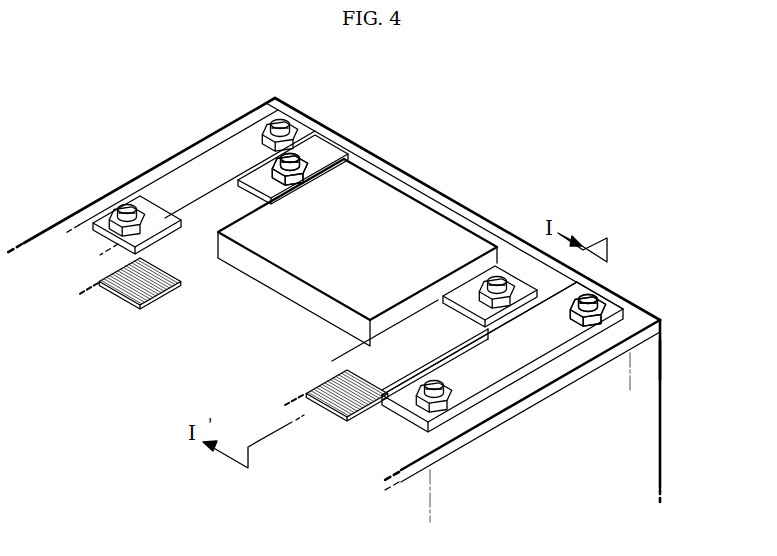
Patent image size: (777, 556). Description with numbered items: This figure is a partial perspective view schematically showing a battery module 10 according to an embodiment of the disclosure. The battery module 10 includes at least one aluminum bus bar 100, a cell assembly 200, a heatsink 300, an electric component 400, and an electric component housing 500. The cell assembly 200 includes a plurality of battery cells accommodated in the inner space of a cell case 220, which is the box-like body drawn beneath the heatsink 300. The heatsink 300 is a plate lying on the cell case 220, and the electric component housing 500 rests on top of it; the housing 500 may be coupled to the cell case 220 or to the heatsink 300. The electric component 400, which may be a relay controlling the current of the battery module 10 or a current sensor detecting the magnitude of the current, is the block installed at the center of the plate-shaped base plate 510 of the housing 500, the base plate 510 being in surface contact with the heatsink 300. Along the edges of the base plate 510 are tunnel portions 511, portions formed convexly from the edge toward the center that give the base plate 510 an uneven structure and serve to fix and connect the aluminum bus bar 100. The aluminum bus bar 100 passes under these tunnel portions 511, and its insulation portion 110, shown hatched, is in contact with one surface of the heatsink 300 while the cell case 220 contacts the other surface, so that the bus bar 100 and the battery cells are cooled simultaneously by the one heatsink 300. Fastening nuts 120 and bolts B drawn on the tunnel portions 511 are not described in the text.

The battery module 10 is at (496, 117).
The aluminum bus bar 100 is at (78, 283).
The insulation portion 110 is at (143, 287).
The nut 120 is at (270, 172).
The cell assembly 200 is at (674, 413).
The cell case 220 is at (647, 372).
The heatsink 300 is at (639, 319).
The electric component 400 is at (407, 199).
The electric component housing 500 is at (342, 140).
The base plate 510 is at (195, 173).
The tunnel portion 511 is at (170, 227).
The bolt B is at (295, 157).